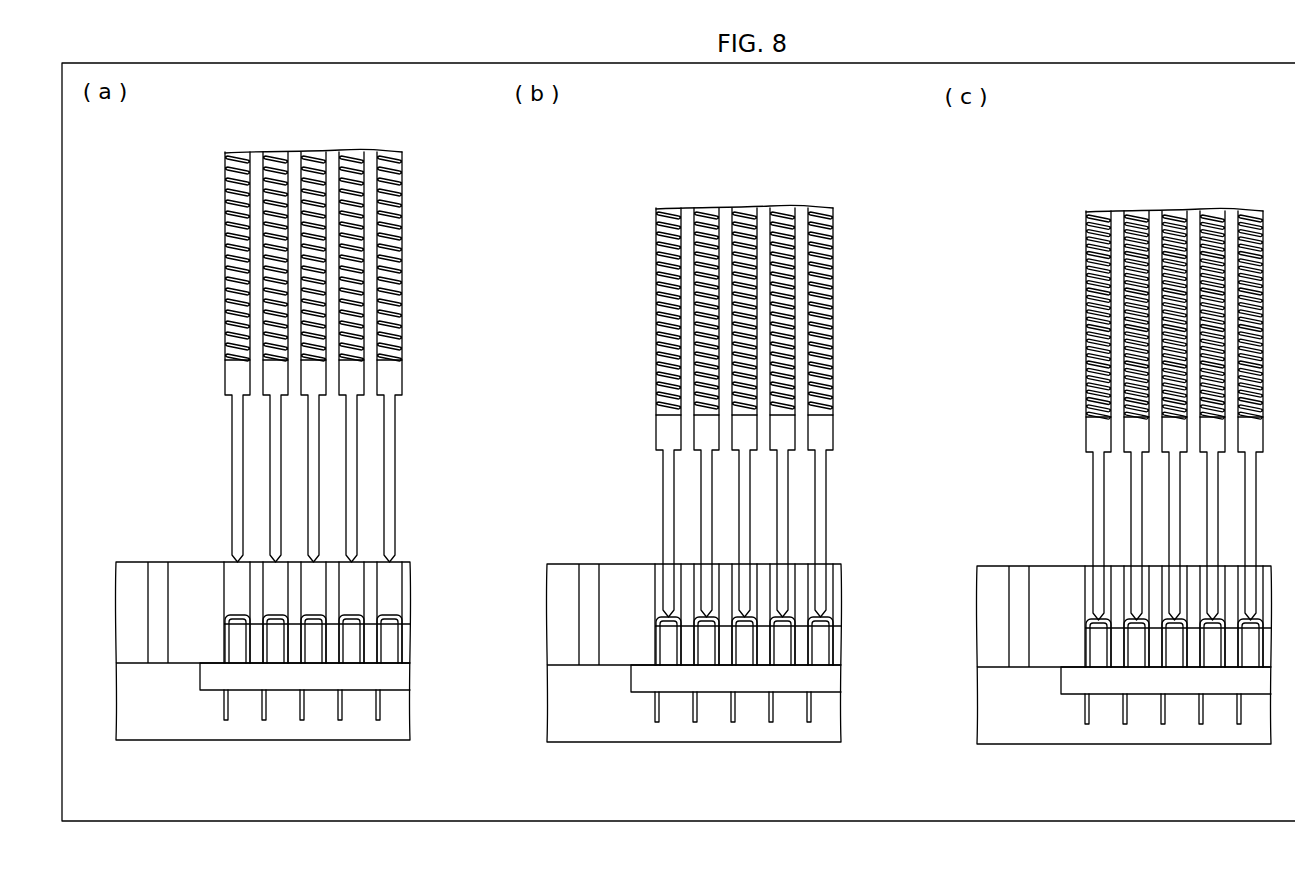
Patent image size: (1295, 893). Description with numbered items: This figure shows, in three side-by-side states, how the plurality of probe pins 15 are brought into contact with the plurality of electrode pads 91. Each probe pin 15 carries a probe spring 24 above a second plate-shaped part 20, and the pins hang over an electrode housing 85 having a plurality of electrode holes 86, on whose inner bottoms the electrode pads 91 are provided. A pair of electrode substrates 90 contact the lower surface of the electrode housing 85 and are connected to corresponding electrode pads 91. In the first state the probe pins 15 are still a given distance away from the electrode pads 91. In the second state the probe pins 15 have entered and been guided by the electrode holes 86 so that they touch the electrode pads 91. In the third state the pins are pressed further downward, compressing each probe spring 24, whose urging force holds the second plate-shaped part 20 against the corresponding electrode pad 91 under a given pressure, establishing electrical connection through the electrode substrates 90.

The probe pin 15 is at (228, 143).
The probe spring 24 is at (229, 240).
The second plate-shaped part 20 is at (228, 380).
The electrode housing 85 is at (190, 572).
The electrode hole 86 is at (228, 572).
The electrode substrate 90 is at (283, 690).
The electrode pad 91 is at (224, 660).